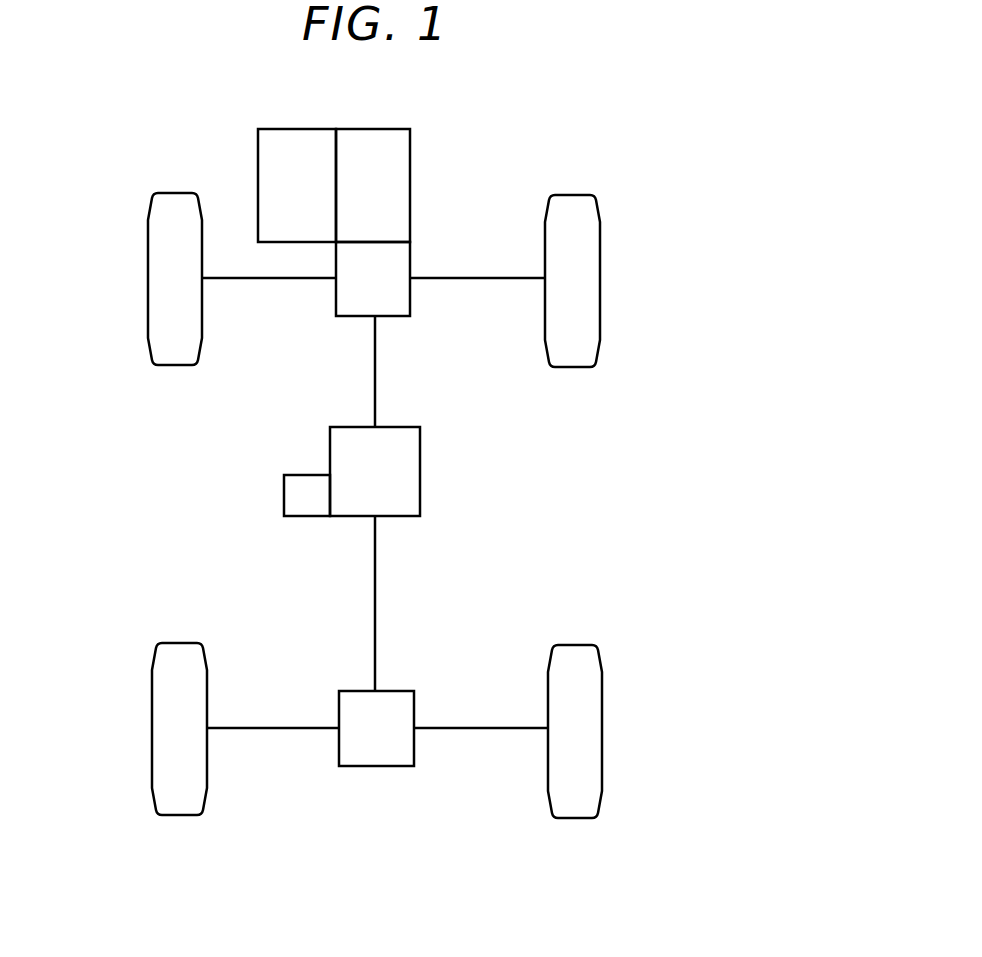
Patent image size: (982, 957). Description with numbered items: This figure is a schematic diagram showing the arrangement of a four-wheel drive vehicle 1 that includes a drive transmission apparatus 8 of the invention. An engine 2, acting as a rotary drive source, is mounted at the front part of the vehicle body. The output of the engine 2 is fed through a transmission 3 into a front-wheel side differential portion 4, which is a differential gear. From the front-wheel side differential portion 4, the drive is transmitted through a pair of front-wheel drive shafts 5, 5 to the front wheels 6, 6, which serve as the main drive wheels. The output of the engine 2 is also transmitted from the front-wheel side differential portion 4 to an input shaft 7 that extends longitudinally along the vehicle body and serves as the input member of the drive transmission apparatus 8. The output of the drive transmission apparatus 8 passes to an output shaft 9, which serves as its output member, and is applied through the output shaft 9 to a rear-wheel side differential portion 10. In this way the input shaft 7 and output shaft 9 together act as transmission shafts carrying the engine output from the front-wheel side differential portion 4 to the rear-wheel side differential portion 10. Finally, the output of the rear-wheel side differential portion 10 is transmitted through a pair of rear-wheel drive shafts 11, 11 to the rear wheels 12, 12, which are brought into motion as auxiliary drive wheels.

The four-wheel drive vehicle 1 is at (513, 149).
The engine 2 is at (293, 152).
The transmission 3 is at (397, 167).
The front-wheel side differential portion 4 is at (392, 266).
The front-wheel drive shafts 5 is at (268, 282).
The front wheels 6 is at (165, 272).
The input shaft 7 is at (375, 397).
The drive transmission apparatus 8 is at (420, 463).
The output shaft 9 is at (375, 600).
The rear-wheel side differential portion 10 is at (414, 706).
The rear-wheel drive shafts 11 is at (267, 730).
The rear wheels 12 is at (163, 705).